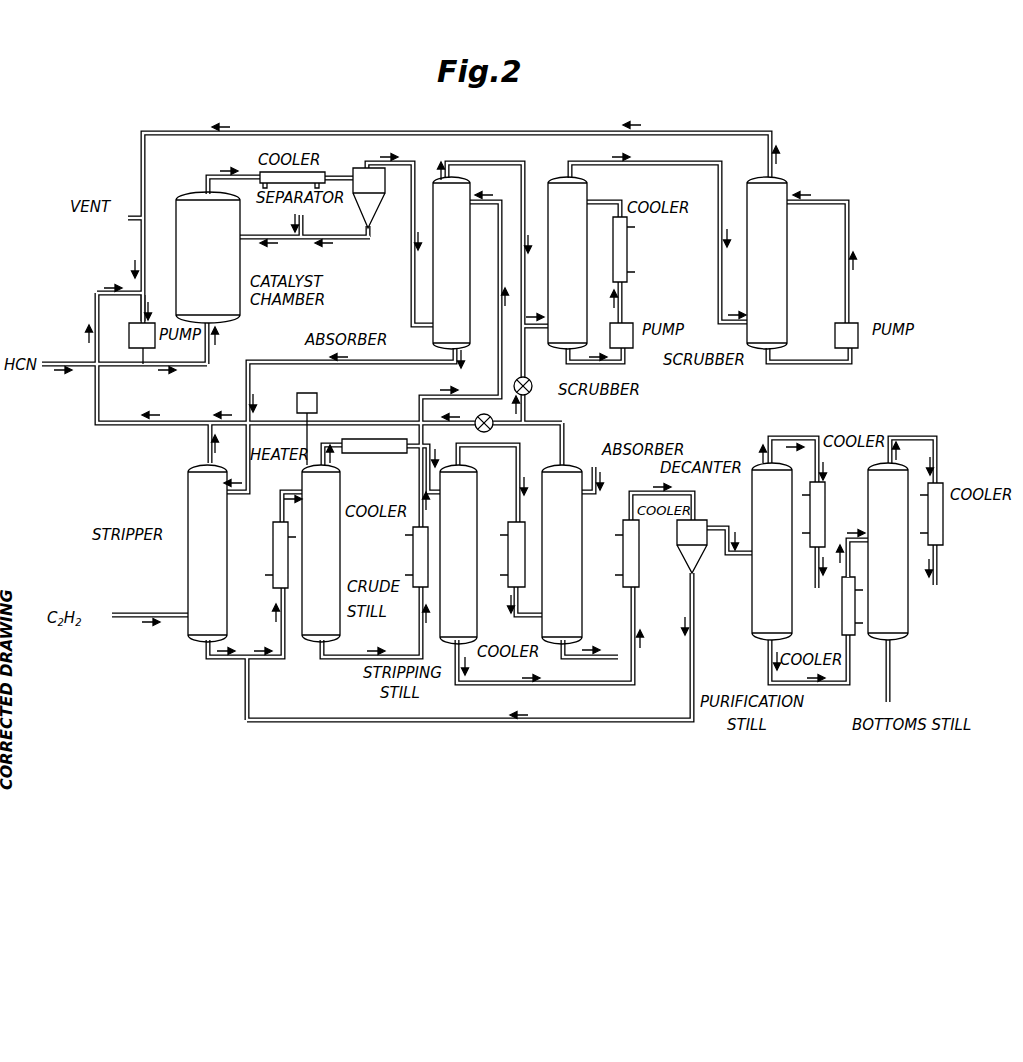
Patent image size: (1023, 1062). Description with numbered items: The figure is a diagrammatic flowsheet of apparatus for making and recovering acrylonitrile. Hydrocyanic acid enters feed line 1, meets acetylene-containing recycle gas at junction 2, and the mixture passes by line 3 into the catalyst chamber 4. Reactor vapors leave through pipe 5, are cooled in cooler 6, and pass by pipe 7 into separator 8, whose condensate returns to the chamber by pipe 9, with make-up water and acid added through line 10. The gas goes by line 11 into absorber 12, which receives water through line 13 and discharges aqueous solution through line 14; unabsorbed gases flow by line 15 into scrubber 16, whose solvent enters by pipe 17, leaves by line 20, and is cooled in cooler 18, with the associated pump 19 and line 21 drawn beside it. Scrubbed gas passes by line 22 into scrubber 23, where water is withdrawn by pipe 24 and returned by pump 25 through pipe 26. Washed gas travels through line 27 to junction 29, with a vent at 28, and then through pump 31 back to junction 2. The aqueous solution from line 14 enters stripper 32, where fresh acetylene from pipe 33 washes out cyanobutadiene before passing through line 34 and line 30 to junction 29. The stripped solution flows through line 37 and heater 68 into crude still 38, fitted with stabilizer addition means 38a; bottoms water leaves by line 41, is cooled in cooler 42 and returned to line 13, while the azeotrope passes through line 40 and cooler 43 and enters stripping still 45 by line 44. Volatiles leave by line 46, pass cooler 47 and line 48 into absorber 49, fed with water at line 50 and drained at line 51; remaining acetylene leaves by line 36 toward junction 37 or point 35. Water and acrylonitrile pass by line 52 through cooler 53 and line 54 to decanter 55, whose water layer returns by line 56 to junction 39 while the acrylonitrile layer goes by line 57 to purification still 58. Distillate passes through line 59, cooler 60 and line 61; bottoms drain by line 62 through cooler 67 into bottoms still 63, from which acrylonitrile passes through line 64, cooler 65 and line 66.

The feed line 1 is at (58, 362).
The junction 2 is at (154, 364).
The line 3 is at (211, 352).
The catalyst chamber 4 is at (238, 298).
The pipe 5 is at (206, 188).
The cooler 6 is at (260, 170).
The pipe 7 is at (345, 178).
The separator 8 is at (369, 198).
The pipe 9 is at (366, 240).
The line 10 is at (306, 218).
The line 11 is at (434, 327).
The absorber 12 is at (451, 263).
The line 13 is at (470, 210).
The line 14 is at (369, 376).
The line 15 is at (508, 162).
The scrubber 16 is at (567, 263).
The pipe 17 is at (592, 210).
The cooler 18 is at (631, 248).
The pump 19 is at (632, 352).
The line 20 is at (566, 352).
The line 21 is at (628, 300).
The line 22 is at (570, 172).
The scrubber 23 is at (767, 263).
The pipe 24 is at (809, 351).
The pump 25 is at (860, 352).
The pipe 26 is at (840, 202).
The line 27 is at (292, 132).
The vent 28 is at (132, 222).
The junction 29 is at (144, 300).
The line 30 is at (92, 316).
The pump 31 is at (129, 337).
The stripper 32 is at (207, 553).
The pipe 33 is at (163, 615).
The line 34 is at (206, 446).
The point 35 is at (214, 420).
The line 36 is at (565, 448).
The line 37 is at (528, 324).
The crude still 38 is at (321, 553).
The stabilizer addition means 38a is at (320, 408).
The junction 39 is at (252, 666).
The line 40 is at (329, 446).
The line 41 is at (352, 662).
The cooler 42 is at (413, 558).
The cooler 43 is at (388, 456).
The line 44 is at (432, 438).
The stripping still 45 is at (458, 554).
The line 46 is at (492, 438).
The cooler 47 is at (509, 558).
The line 48 is at (529, 601).
The absorber 49 is at (562, 554).
The line 50 is at (596, 489).
The line 51 is at (596, 660).
The line 52 is at (496, 684).
The cooler 53 is at (643, 562).
The line 54 is at (656, 494).
The decanter 55 is at (692, 546).
The line 56 is at (246, 700).
The line 57 is at (729, 552).
The purification still 58 is at (772, 551).
The line 59 is at (800, 442).
The cooler 60 is at (827, 508).
The line 61 is at (817, 572).
The line 62 is at (774, 678).
The bottoms still 63 is at (888, 551).
The line 64 is at (925, 442).
The cooler 65 is at (945, 522).
The line 66 is at (939, 569).
The cooler 67 is at (844, 606).
The heater 68 is at (272, 558).